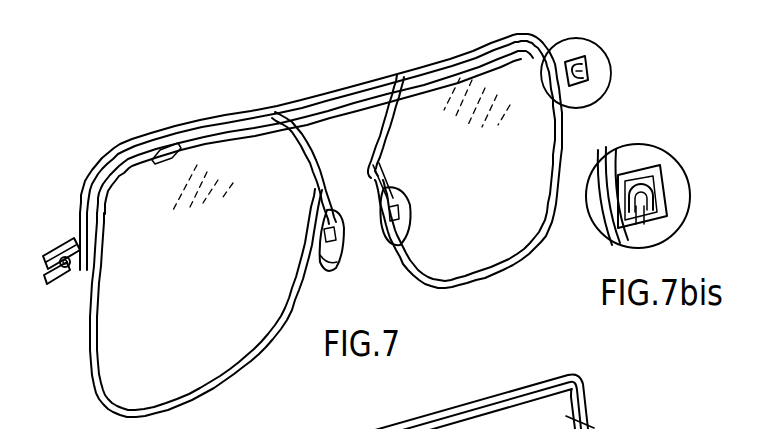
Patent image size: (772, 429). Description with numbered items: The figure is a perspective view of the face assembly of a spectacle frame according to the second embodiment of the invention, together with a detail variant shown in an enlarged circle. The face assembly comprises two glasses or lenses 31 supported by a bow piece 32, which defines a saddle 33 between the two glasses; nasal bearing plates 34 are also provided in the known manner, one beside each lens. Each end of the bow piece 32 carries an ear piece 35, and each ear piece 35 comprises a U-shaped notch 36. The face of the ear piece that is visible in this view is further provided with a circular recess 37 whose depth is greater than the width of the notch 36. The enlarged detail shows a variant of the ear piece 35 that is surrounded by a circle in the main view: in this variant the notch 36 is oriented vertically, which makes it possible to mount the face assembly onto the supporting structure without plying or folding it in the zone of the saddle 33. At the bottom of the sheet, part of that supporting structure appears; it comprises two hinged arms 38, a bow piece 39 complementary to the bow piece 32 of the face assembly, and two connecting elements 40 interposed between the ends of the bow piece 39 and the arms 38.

In FIG. 7, the glasses or lenses 31 is at (115, 370).
In FIG. 7, the bow piece 32 is at (88, 200).
In FIG. 7, the saddle 33 is at (342, 92).
In FIG. 7, the nasal bearing plates 34 is at (397, 235).
In FIG. 7, the ear piece 35 is at (55, 287).
In FIG. 7, the U-shaped notch 36 is at (45, 270).
In FIG. 7bis, the U-shaped notch 36 is at (652, 211).
In FIG. 7, the circular recess 37 is at (68, 278).
In FIG. 7, the hinged arms 38 is at (669, 423).
In FIG. 7, the bow piece 39 is at (458, 400).
In FIG. 7, the connecting elements 40 is at (600, 427).